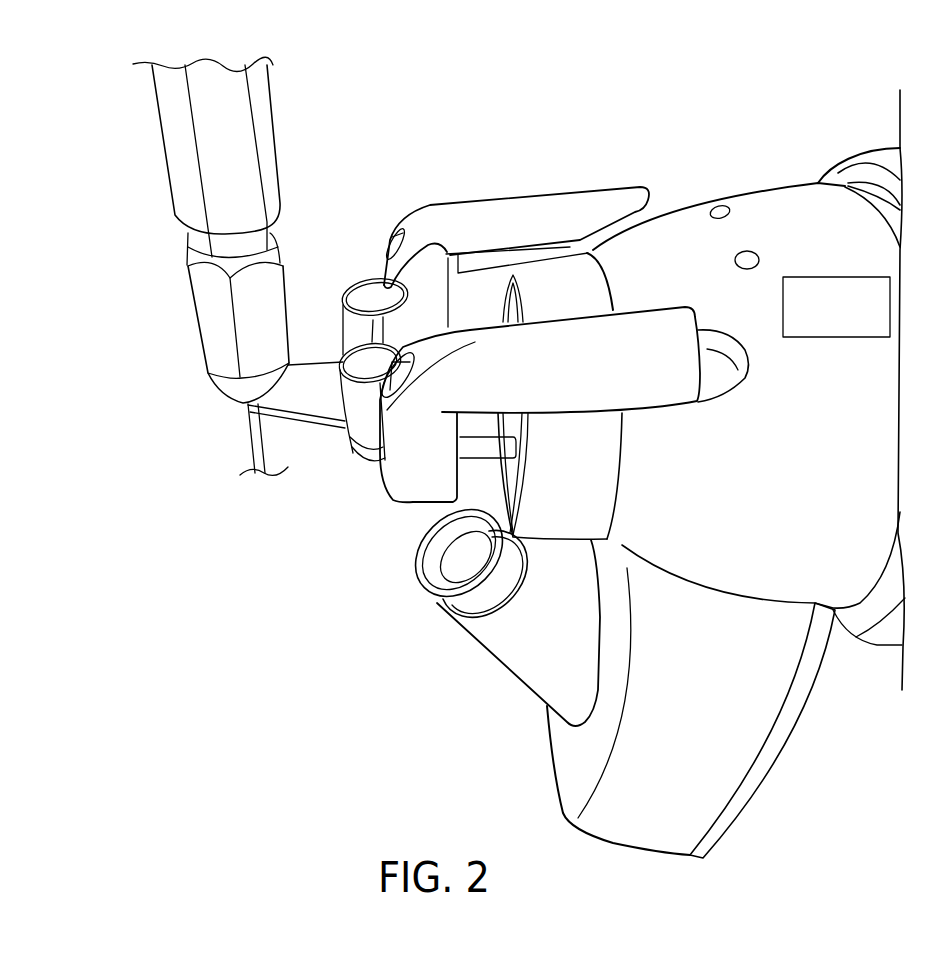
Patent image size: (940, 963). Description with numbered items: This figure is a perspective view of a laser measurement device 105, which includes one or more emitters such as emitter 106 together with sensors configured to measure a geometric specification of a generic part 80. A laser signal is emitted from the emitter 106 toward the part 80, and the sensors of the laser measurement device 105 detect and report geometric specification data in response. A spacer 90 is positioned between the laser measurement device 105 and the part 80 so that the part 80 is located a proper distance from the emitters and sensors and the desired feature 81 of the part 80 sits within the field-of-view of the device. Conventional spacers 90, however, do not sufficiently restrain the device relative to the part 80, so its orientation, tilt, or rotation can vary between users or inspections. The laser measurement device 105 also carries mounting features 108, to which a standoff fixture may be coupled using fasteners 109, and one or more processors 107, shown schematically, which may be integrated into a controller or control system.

The generic part 80 is at (160, 287).
The feature 81 is at (243, 420).
The spacer 90 is at (312, 397).
The laser measurement device 105 is at (700, 102).
The emitter 106 is at (452, 605).
The processors 107 is at (854, 318).
The mounting features 108 is at (560, 245).
The fasteners 109 is at (375, 467).